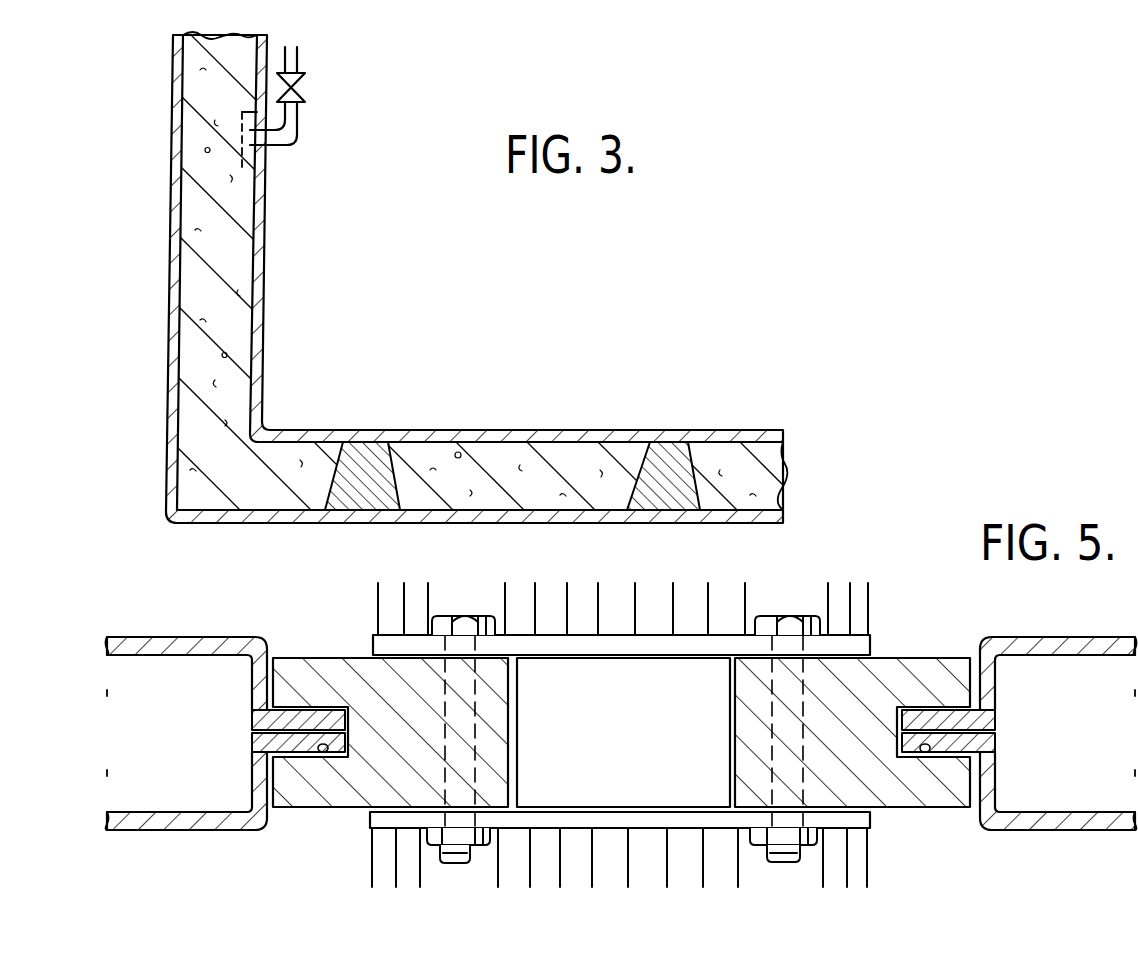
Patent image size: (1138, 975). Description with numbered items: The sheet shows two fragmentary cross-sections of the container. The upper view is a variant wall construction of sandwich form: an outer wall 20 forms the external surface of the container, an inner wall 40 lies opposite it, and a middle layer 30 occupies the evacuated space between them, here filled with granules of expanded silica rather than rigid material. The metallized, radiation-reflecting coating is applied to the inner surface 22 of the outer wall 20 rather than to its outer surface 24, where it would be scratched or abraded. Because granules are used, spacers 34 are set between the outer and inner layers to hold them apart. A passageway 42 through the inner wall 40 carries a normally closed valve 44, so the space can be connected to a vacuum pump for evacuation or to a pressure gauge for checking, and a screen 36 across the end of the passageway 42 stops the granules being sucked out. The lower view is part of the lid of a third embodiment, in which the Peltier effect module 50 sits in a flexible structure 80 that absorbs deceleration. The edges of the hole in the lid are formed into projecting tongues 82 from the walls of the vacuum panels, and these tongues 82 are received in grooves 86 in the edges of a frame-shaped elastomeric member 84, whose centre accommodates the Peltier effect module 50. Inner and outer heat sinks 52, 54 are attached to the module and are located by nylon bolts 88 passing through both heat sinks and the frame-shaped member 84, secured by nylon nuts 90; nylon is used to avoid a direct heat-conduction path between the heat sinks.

In FIG. 3, the outer wall 20 is at (172, 202).
In FIG. 3, the inner surface of the outer wall 22 is at (180, 376).
In FIG. 3, the outer surface of the outer wall 24 is at (164, 460).
In FIG. 3, the middle layer 30 is at (222, 393).
In FIG. 3, the spacers 34 is at (357, 462).
In FIG. 3, the screen 36 is at (257, 167).
In FIG. 3, the inner wall 40 is at (510, 437).
In FIG. 3, the passageway 42 is at (270, 139).
In FIG. 3, the valve 44 is at (300, 78).
In FIG. 5, the Peltier effect module 50 is at (633, 753).
In FIG. 5, the inner heat sink 52 is at (845, 888).
In FIG. 5, the outer heat sink 54 is at (873, 603).
In FIG. 5, the flexible structure 80 is at (847, 563).
In FIG. 5, the projecting tongues 82 is at (296, 715).
In FIG. 5, the frame-shaped elastomeric member 84 is at (363, 677).
In FIG. 5, the grooves 86 is at (317, 752).
In FIG. 5, the nylon bolts 88 is at (455, 687).
In FIG. 5, the nylon nuts 90 is at (782, 856).